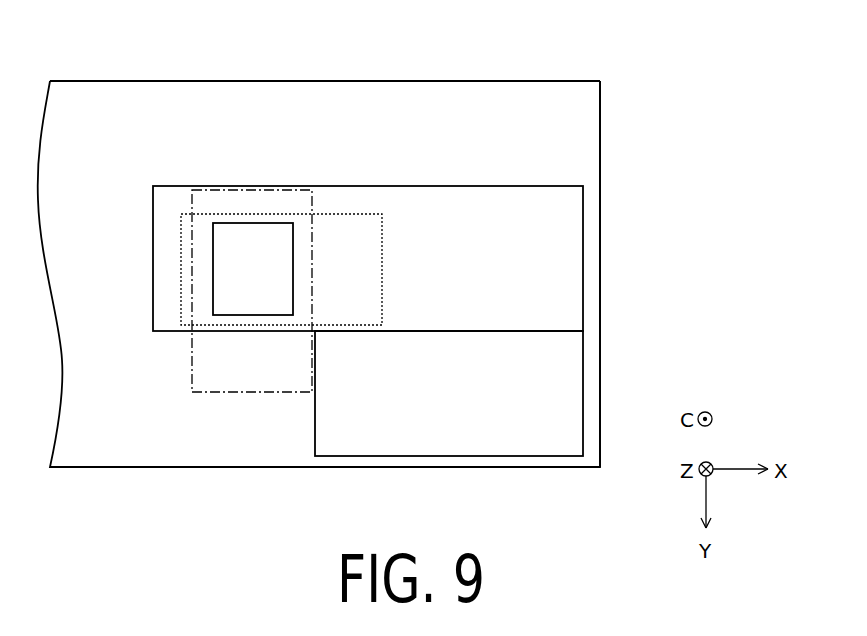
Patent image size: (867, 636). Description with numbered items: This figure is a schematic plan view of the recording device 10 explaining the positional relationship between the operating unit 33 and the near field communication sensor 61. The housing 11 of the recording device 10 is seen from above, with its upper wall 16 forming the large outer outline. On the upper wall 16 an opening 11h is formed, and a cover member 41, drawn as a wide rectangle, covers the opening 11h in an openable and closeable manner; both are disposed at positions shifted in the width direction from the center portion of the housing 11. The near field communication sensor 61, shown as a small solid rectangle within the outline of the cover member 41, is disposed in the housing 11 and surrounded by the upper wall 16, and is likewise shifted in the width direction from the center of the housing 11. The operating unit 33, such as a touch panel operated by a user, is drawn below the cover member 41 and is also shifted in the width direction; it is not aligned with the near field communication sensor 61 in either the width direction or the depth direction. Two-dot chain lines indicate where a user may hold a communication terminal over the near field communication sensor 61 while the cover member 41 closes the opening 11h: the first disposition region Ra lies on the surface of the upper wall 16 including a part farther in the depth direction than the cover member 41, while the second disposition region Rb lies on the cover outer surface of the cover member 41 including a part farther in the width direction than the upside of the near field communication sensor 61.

The recording device 10 is at (355, 241).
The housing 11 is at (602, 114).
The opening 11h is at (584, 258).
The upper wall 16 is at (565, 90).
The operating unit 33 is at (577, 387).
The cover member 41 is at (577, 220).
The near field communication sensor 61 is at (247, 231).
The first disposition region Ra is at (192, 360).
The second disposition region Rb is at (383, 241).